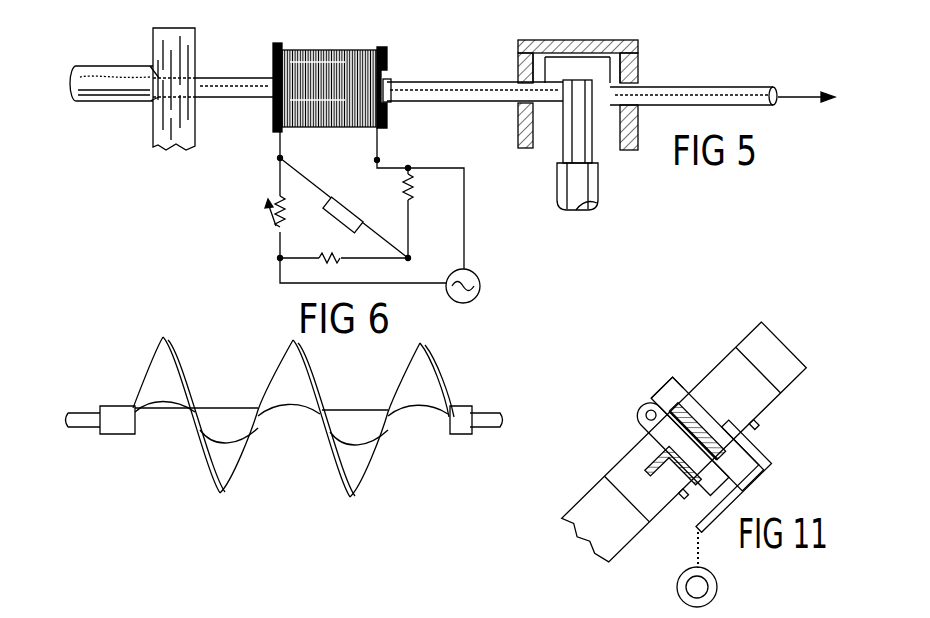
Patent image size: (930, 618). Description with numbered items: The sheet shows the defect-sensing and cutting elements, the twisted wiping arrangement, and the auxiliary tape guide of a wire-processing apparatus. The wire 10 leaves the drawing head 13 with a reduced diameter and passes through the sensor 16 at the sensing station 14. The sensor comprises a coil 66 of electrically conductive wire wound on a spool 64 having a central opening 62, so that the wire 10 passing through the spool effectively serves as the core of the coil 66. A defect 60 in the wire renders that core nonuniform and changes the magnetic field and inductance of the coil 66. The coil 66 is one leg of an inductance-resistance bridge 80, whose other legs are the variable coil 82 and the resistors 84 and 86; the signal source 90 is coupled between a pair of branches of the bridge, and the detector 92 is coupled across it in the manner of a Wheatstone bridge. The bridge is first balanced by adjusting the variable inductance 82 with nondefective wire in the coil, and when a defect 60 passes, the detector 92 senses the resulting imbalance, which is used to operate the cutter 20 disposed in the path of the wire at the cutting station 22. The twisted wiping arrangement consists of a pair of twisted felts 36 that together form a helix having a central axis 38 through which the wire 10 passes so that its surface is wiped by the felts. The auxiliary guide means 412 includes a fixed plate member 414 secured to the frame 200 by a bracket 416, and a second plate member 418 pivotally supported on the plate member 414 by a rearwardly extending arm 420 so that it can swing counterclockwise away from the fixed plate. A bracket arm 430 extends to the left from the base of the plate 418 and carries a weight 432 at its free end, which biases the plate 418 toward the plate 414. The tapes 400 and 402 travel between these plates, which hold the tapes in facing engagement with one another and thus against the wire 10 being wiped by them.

In FIG. 5, the wire 10 is at (110, 104).
In FIG. 11, the wire 10 is at (698, 430).
In FIG. 5, the drawing head 13 is at (188, 45).
In FIG. 5, the sensing station 14 is at (316, 38).
In FIG. 5, the sensing means 16 is at (273, 130).
In FIG. 5, the cutter 20 is at (571, 125).
In FIG. 5, the cutting station 22 is at (660, 52).
In FIG. 5, the defect 60 is at (224, 98).
In FIG. 5, the axial opening 62 is at (390, 80).
In FIG. 5, the spool 64 is at (385, 48).
In FIG. 5, the coil 66 is at (353, 53).
In FIG. 5, the inductance-resistance bridge 80 is at (262, 255).
In FIG. 5, the variable inductance coil 82 is at (267, 215).
In FIG. 5, the resistor 84 is at (414, 203).
In FIG. 5, the resistor 86 is at (325, 252).
In FIG. 5, the signal source 90 is at (482, 291).
In FIG. 5, the detector 92 is at (348, 207).
In FIG. 6, the twisted felts 36 is at (314, 463).
In FIG. 6, the central axis 38 is at (238, 415).
In FIG. 11, the frame 200 is at (626, 441).
In FIG. 11, the tape 400 is at (663, 396).
In FIG. 11, the tape 402 is at (675, 379).
In FIG. 11, the auxiliary guide means 412 is at (701, 355).
In FIG. 11, the fixed plate member 414 is at (646, 410).
In FIG. 11, the bracket 416 is at (657, 479).
In FIG. 11, the second plate member 418 is at (703, 410).
In FIG. 11, the rearwardly extending arm 420 is at (655, 400).
In FIG. 11, the bracket arm 430 is at (758, 458).
In FIG. 11, the weight 432 is at (719, 585).